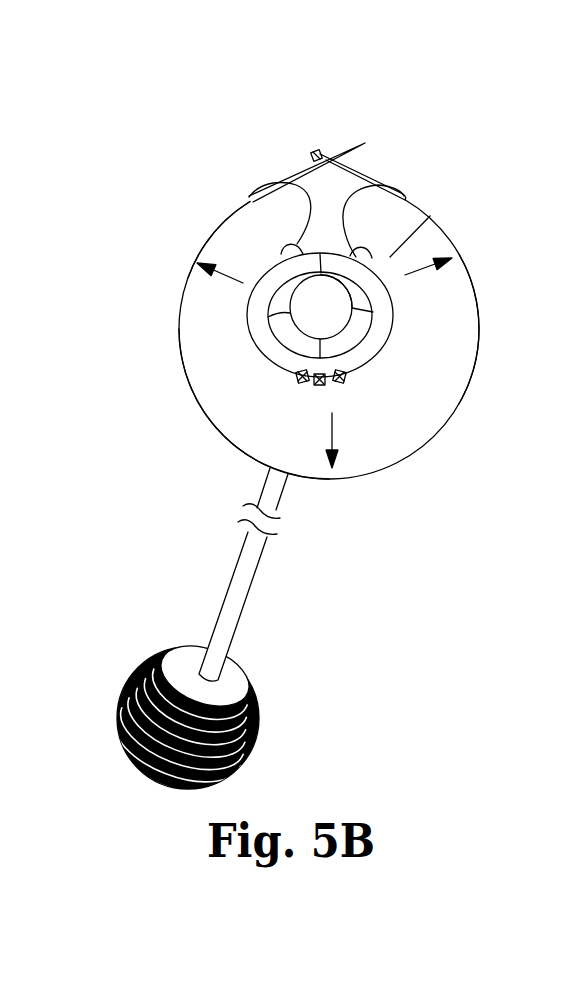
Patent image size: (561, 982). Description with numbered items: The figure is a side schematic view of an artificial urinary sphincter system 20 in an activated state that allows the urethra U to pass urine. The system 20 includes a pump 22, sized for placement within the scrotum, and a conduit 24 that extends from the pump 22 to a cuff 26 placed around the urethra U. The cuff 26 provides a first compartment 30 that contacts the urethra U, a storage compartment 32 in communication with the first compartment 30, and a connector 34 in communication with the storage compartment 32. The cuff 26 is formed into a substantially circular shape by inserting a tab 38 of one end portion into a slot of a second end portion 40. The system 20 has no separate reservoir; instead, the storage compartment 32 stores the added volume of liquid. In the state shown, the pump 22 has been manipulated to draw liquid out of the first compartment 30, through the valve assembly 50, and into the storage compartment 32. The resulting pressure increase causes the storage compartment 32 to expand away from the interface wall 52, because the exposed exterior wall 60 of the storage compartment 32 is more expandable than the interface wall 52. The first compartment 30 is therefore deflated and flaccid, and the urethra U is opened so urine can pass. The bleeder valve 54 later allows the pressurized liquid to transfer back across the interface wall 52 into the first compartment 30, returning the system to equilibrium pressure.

The artificial urinary sphincter system 20 is at (365, 108).
The pump 22 is at (247, 747).
The conduit 24 is at (226, 632).
The cuff 26 is at (190, 200).
The first compartment 30 is at (283, 260).
The storage compartment 32 is at (190, 337).
The connector 34 is at (275, 495).
The tab 38 is at (383, 175).
The second end portion 40 is at (316, 152).
The valve assembly 50 is at (320, 385).
The interface wall 52 is at (390, 338).
The bleeder valve 54 is at (298, 381).
The exposed exterior wall 60 is at (480, 348).
The urethra U is at (323, 297).